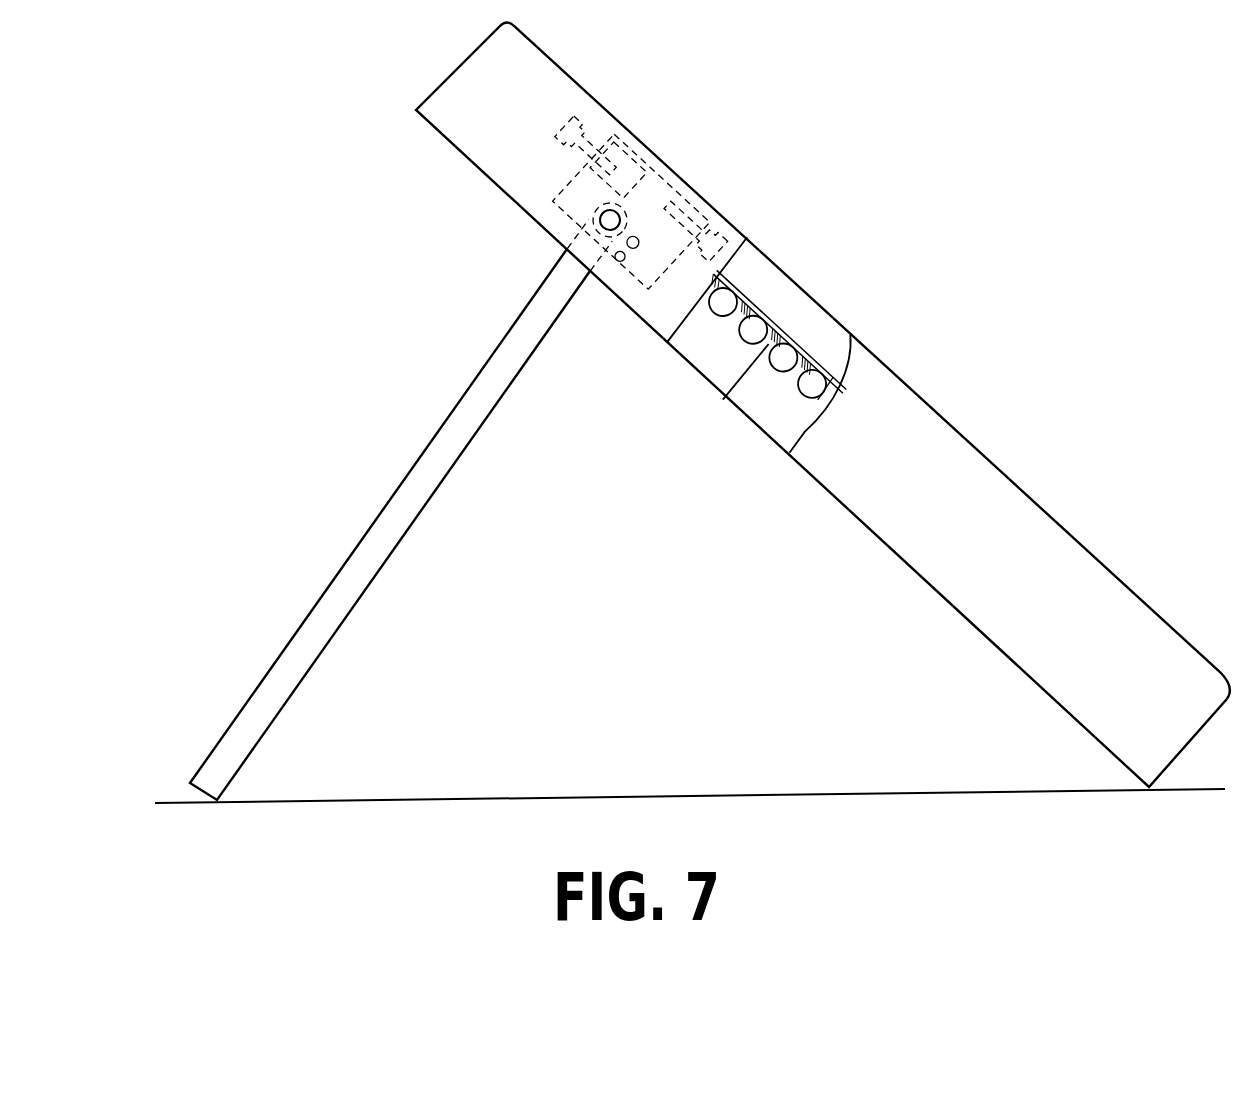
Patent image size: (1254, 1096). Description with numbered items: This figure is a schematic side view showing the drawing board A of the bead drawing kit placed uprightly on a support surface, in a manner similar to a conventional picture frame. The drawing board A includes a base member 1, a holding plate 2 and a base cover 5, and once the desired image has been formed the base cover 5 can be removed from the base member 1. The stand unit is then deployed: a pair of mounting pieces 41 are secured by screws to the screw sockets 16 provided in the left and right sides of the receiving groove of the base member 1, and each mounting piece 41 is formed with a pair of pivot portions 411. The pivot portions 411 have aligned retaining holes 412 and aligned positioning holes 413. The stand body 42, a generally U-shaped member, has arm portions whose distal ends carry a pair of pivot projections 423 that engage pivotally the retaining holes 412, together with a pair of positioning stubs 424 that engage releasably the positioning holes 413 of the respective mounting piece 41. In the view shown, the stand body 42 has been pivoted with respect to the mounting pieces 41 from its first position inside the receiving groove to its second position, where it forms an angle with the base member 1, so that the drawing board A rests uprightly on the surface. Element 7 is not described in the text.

The base member 1 is at (905, 425).
The drawing board A is at (1086, 548).
The holding plate 2 is at (723, 400).
The base cover 5 is at (975, 615).
The ball bearings 7 is at (724, 302).
The screw sockets 16 is at (612, 113).
The mounting pieces 41 is at (687, 200).
The stand body 42 is at (395, 521).
The pivot portions 411 is at (633, 275).
The retaining holes 412 is at (628, 188).
The positioning holes 413 is at (737, 238).
The pivot projections 423 is at (588, 222).
The positioning stubs 424 is at (617, 260).